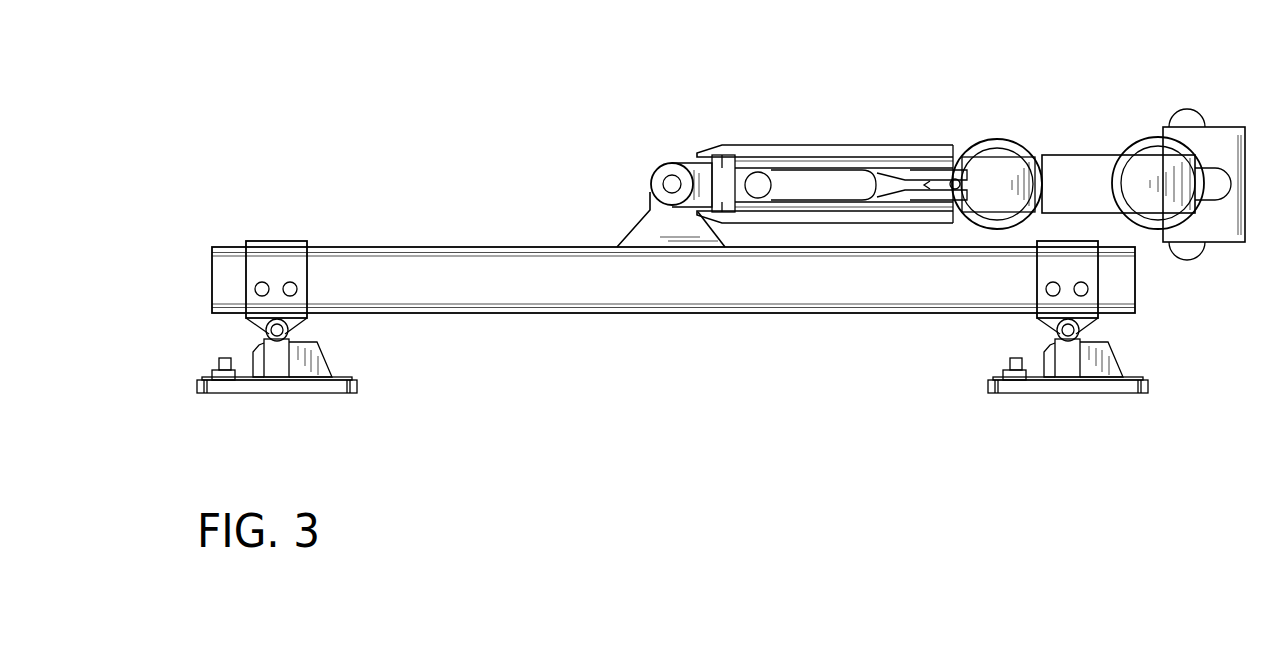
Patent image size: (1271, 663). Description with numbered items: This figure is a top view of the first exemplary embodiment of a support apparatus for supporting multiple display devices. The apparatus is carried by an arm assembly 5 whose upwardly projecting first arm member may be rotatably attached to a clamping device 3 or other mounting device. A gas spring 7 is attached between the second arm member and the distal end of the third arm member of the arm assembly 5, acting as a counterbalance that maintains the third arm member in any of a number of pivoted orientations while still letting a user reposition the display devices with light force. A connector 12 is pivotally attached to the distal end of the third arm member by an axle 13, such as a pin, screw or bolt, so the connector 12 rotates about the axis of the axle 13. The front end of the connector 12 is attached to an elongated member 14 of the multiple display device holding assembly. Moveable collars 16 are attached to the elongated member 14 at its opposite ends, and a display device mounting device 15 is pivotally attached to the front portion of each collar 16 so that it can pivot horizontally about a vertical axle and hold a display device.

The clamping device 3 is at (1223, 132).
The arm assembly 5 is at (1077, 128).
The gas spring 7 is at (873, 142).
The connector 12 is at (672, 237).
The axle 13 is at (672, 184).
The elongated member 14 is at (539, 264).
The display device mounting device 15 is at (265, 391).
The collar 16 is at (277, 257).